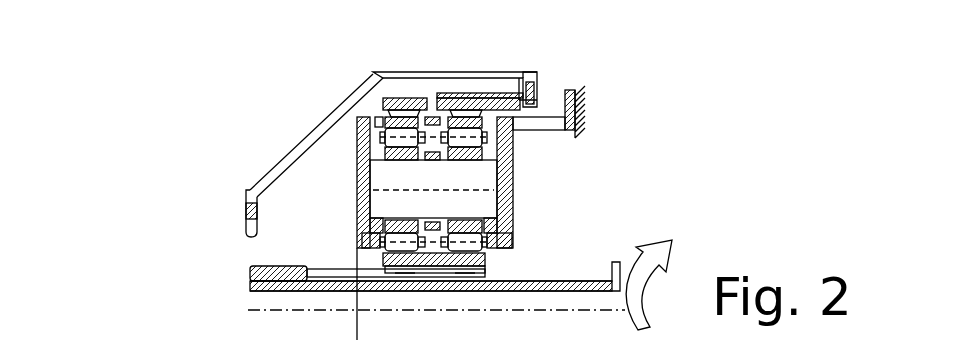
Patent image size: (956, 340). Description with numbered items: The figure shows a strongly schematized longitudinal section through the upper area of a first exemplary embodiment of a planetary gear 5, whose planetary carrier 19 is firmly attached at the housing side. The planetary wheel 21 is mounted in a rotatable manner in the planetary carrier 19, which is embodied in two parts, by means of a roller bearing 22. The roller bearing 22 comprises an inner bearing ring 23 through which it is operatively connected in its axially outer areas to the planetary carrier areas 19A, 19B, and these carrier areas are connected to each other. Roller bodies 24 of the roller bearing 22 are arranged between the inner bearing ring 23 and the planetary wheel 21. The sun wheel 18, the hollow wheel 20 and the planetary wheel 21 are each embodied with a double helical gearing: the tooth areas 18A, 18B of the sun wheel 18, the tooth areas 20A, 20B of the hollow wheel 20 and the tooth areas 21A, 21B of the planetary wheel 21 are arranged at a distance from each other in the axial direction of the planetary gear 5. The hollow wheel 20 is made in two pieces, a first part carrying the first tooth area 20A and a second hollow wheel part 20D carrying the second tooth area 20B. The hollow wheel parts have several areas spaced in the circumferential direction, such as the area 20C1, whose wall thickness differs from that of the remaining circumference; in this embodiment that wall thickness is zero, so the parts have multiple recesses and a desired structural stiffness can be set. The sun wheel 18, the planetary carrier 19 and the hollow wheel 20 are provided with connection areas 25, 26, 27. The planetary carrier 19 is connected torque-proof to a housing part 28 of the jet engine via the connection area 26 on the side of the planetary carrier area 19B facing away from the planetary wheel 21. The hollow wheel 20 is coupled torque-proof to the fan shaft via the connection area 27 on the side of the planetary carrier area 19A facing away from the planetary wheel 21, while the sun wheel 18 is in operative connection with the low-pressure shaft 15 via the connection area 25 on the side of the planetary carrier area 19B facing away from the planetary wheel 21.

The planetary gear 5 is at (188, 68).
The low-pressure shaft 15 is at (593, 280).
The sun wheel 18 is at (372, 284).
The tooth area 18A is at (390, 266).
The tooth area 18B is at (488, 271).
The planetary carrier 19 is at (522, 148).
The planetary carrier area 19A is at (358, 184).
The planetary carrier area 19B is at (513, 203).
The hollow wheel 20 is at (490, 88).
The tooth area 20A is at (425, 98).
The tooth area 20B is at (490, 99).
The area of differing wall thickness 20C1 is at (356, 318).
The second hollow wheel part 20D is at (533, 104).
The planetary wheel 21 is at (354, 245).
The tooth area 21A is at (440, 95).
The tooth area 21B is at (540, 96).
The roller bearing 22 is at (372, 125).
The inner bearing ring 23 is at (322, 124).
The roller bodies 24 is at (383, 101).
The connection area 25 is at (240, 272).
The connection area 26 is at (592, 126).
The connection area 27 is at (236, 210).
The housing part 28 is at (580, 105).